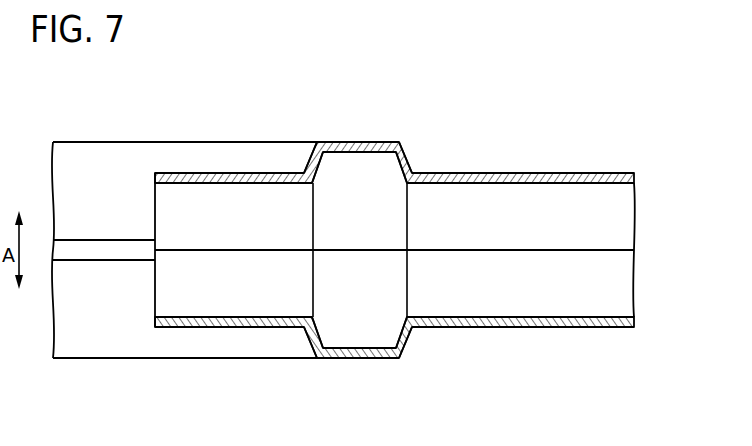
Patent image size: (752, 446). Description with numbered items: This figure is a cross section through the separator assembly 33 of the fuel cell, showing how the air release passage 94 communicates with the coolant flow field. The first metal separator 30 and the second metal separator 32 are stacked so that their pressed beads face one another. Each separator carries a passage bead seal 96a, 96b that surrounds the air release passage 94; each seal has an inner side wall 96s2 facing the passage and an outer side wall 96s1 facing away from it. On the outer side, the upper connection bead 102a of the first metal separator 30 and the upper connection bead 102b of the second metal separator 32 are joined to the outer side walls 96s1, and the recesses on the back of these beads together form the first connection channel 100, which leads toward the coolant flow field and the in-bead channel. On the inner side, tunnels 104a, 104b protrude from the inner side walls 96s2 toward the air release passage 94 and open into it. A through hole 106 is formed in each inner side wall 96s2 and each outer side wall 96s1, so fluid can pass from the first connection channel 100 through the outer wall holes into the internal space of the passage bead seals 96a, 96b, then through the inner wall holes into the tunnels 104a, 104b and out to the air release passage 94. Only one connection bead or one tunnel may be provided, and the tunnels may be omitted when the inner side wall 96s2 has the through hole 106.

The housing 33 is at (86, 90).
The passage bead seal 96a is at (128, 142).
The passage bead seal 96b is at (128, 358).
The air release passage 94 is at (95, 246).
The first metal separator 30 is at (611, 166).
The second metal separator 32 is at (611, 336).
The tunnel 104a is at (207, 178).
The tunnel 104b is at (207, 325).
The upper connection bead 102a is at (562, 180).
The upper connection bead 102b is at (563, 328).
The outer side wall 96s1 is at (412, 164).
The inner side wall 96s2 is at (309, 166).
The first connection channel 100 is at (613, 223).
The through hole 106 is at (311, 209).